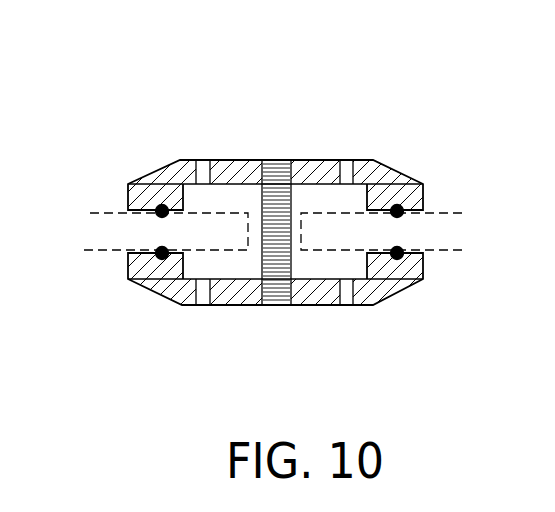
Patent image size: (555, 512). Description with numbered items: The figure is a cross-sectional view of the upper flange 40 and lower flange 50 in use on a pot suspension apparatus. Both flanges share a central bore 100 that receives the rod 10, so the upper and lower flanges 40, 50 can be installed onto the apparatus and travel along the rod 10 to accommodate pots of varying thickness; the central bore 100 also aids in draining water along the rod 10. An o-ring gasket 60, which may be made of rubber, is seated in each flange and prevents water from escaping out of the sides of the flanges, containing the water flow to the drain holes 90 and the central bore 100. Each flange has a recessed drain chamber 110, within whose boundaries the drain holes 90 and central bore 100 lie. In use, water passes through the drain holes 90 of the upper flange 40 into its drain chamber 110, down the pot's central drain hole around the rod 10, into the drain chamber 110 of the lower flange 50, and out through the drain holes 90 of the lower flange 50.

The rod 10 is at (283, 172).
The upper flange 40 is at (397, 172).
The lower flange 50 is at (135, 281).
The o-ring gasket 60 is at (155, 251).
The drain holes 90 is at (205, 172).
The central bore 100 is at (263, 162).
The drain chamber 110 is at (200, 200).